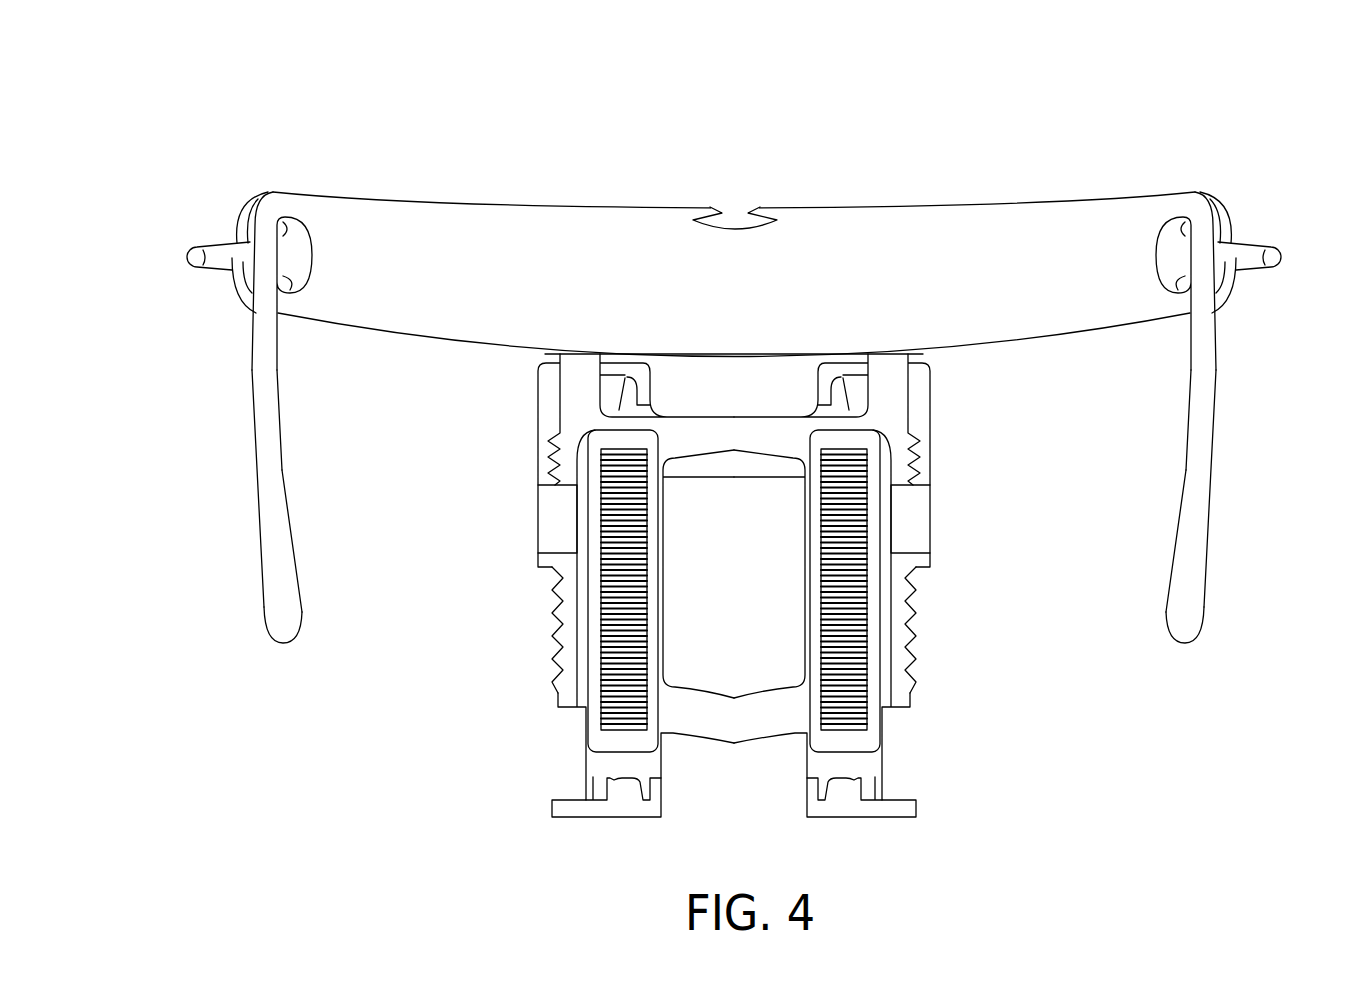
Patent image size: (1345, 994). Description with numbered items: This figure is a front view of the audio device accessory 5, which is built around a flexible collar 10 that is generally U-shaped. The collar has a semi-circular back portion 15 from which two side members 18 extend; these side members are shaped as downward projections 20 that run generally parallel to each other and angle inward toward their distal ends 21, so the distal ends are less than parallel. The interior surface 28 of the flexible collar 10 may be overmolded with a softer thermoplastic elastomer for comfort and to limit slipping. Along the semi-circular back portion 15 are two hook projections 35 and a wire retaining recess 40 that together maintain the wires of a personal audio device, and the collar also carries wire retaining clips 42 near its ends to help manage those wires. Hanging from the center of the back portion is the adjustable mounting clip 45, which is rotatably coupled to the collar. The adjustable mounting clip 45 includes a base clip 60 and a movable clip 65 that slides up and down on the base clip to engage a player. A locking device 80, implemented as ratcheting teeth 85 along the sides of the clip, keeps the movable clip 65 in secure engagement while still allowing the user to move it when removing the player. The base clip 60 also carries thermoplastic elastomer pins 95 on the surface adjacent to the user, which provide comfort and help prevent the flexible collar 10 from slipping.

The audio device accessory 5 is at (1103, 85).
The flexible collar 10 is at (421, 137).
The semi-circular back portion 15 is at (546, 206).
The side members 18 is at (252, 400).
The downward projections 20 is at (262, 517).
The distal end 21 is at (305, 618).
The interior surface 28 is at (287, 428).
The hook projections 35 is at (189, 248).
The wire retaining recess 40 is at (736, 227).
The wire retaining clips 42 is at (241, 204).
The adjustable mounting clip 45 is at (966, 753).
The base clip 60 is at (590, 768).
The movable clip 65 is at (922, 409).
The locking device 80 is at (538, 520).
The ratcheting teeth 85 is at (552, 590).
The thermoplastic elastomer pins 95 is at (600, 728).